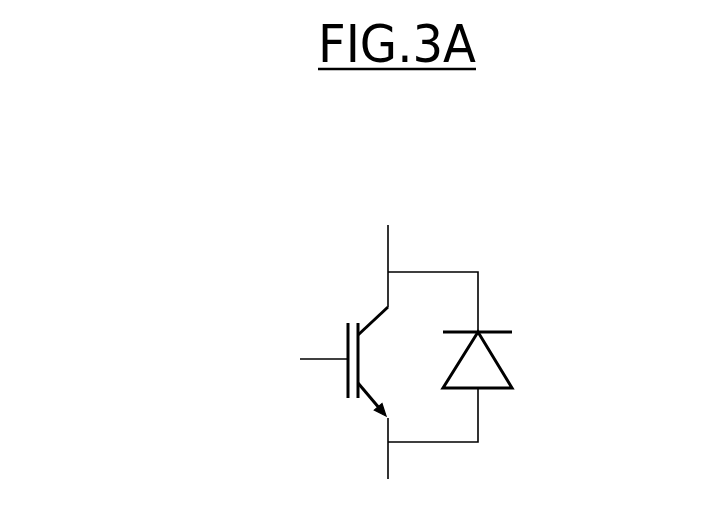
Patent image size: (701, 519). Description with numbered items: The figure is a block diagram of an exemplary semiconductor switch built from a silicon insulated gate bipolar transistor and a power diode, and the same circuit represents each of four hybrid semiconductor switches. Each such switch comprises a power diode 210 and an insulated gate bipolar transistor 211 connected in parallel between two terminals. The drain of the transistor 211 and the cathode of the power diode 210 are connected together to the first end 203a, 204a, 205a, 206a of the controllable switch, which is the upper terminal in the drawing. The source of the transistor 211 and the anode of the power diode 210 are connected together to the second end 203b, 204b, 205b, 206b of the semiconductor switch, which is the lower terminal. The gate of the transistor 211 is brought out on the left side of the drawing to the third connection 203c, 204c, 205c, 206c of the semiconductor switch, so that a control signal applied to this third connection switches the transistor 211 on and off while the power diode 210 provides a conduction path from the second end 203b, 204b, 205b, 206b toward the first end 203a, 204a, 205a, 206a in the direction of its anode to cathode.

The first end 203a is at (526, 260).
The first end 204a is at (526, 260).
The first end 205a is at (526, 260).
The first end 206a is at (388, 225).
The second end 203b is at (526, 455).
The second end 204b is at (526, 455).
The second end 205b is at (526, 455).
The second end 206b is at (388, 479).
The third connection 203c is at (189, 350).
The third connection 204c is at (189, 350).
The third connection 205c is at (189, 350).
The third connection 206c is at (300, 359).
The power diode 210 is at (506, 349).
The insulated gate bipolar transistor 211 is at (326, 394).